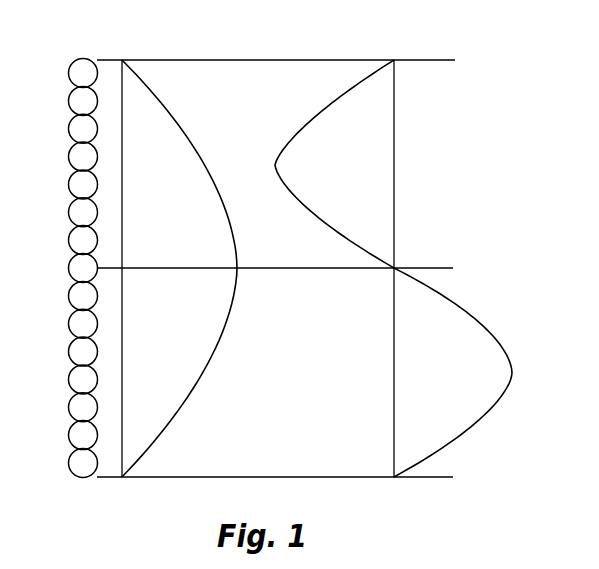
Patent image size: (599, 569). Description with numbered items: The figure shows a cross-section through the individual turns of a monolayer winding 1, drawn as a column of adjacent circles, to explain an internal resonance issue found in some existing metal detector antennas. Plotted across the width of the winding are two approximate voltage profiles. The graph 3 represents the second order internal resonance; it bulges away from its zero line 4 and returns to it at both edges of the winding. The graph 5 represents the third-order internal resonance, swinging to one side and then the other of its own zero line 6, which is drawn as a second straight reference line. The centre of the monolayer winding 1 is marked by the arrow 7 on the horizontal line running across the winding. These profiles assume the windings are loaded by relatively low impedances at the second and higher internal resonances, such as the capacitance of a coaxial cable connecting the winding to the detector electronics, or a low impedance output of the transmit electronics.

The monolayer winding 1 is at (63, 58).
The graph of second order internal resonance voltage profile 3 is at (168, 113).
The zero of graph 3 4 is at (123, 227).
The graph of third-order internal resonance voltage profile 5 is at (290, 193).
The zero of graph 5 6 is at (398, 195).
The centre of the monolayer winding 7 is at (458, 268).